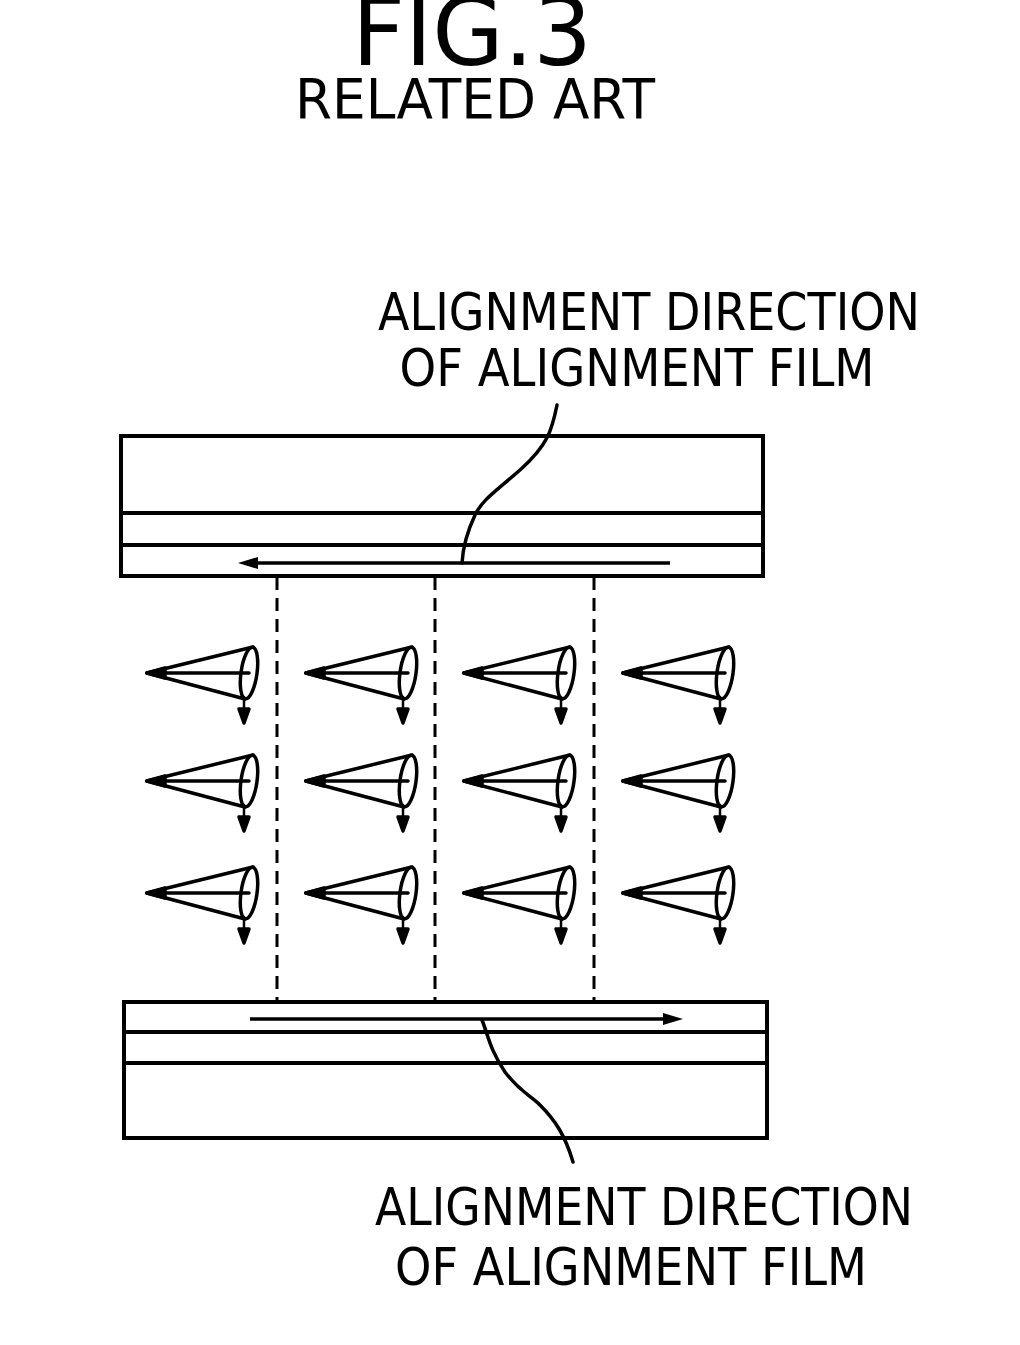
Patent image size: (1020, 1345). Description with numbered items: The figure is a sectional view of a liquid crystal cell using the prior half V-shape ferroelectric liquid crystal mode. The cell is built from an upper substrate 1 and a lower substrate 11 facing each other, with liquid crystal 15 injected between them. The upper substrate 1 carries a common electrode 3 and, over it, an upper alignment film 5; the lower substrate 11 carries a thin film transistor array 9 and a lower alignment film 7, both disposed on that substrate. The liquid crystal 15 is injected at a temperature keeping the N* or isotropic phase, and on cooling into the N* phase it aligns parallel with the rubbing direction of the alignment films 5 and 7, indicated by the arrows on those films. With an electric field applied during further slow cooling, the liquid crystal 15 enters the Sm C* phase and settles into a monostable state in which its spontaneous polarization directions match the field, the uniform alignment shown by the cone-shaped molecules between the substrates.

The upper substrate 1 is at (752, 453).
The common electrode 3 is at (752, 525).
The upper alignment film 5 is at (752, 567).
The lower alignment film 7 is at (755, 1010).
The thin film transistor array 9 is at (755, 1050).
The lower substrate 11 is at (755, 1105).
The liquid crystal 15 is at (185, 900).